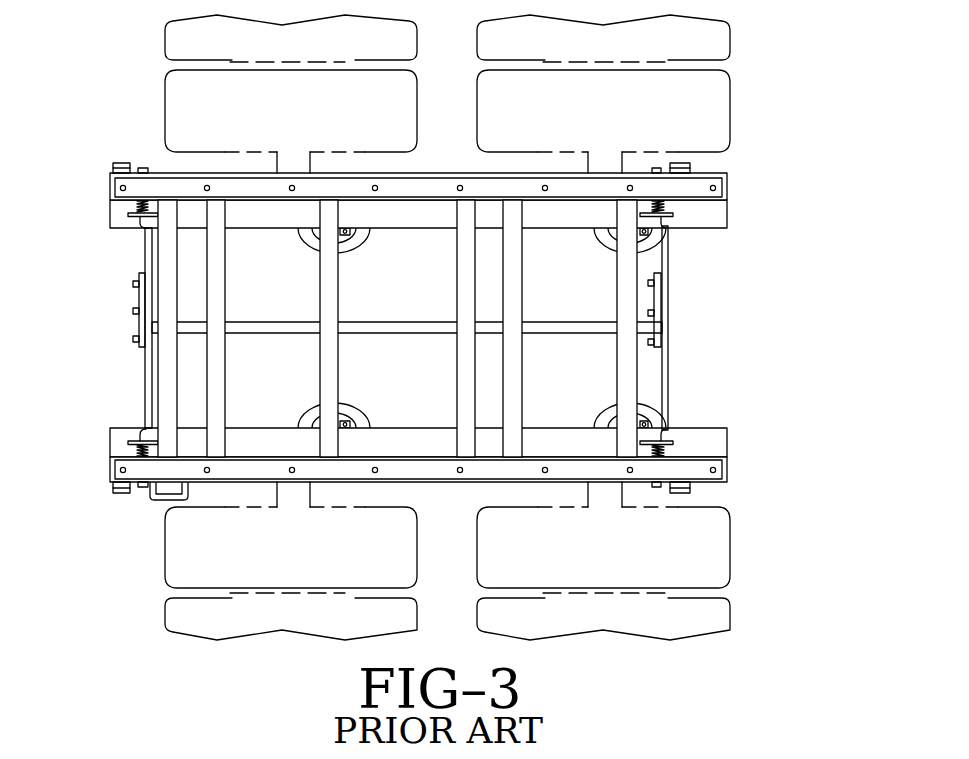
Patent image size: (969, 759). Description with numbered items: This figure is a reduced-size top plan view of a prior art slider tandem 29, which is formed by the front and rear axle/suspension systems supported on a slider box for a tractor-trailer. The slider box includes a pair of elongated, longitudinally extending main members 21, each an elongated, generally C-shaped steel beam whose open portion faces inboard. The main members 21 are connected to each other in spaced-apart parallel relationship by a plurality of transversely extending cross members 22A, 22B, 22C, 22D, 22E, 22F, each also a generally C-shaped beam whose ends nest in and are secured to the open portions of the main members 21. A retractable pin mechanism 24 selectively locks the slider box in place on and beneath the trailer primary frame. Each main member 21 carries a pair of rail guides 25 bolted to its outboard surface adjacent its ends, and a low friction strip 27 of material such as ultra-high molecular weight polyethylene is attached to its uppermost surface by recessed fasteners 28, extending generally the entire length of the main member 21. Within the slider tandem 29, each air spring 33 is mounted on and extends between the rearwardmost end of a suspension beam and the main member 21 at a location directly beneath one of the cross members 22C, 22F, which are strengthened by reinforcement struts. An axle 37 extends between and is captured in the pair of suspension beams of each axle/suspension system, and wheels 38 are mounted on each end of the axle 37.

The main member 21 is at (469, 327).
The cross member 22A is at (106, 328).
The cross member 22B is at (257, 328).
The cross member 22C is at (370, 328).
The cross member 22D is at (422, 328).
The cross member 22E is at (553, 328).
The cross member 22F is at (585, 328).
The retractable pin mechanism 24 is at (708, 328).
The rail guide 25 is at (121, 163).
The low friction strip 27 is at (445, 187).
The recessed fastener 28 is at (207, 186).
The slider tandem 29 is at (491, 312).
The air spring 33 is at (355, 240).
The axle 37 is at (297, 165).
The wheel 38 is at (312, 115).